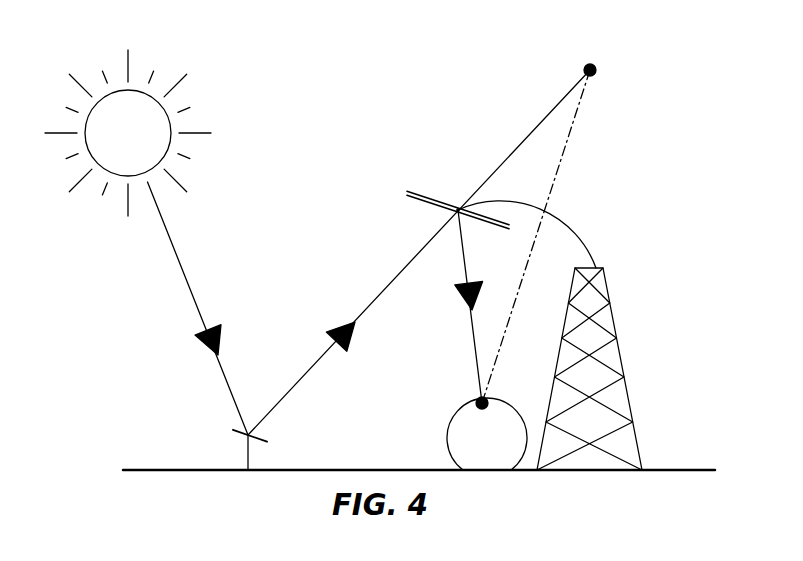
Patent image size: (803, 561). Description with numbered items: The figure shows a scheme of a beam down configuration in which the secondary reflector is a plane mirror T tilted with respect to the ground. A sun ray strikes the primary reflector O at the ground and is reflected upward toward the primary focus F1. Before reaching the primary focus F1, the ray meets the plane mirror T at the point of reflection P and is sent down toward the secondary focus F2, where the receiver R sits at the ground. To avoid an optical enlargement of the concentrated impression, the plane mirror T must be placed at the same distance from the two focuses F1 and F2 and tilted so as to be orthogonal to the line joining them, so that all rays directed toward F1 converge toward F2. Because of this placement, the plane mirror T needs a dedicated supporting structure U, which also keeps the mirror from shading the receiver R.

The primary reflector O is at (237, 432).
The plane mirror T is at (418, 201).
The point of reflection on the secondary reflector P is at (428, 226).
The primary focus F1 is at (623, 71).
The secondary focus F2 is at (455, 381).
The receiver R is at (487, 434).
The supporting structure U is at (609, 290).